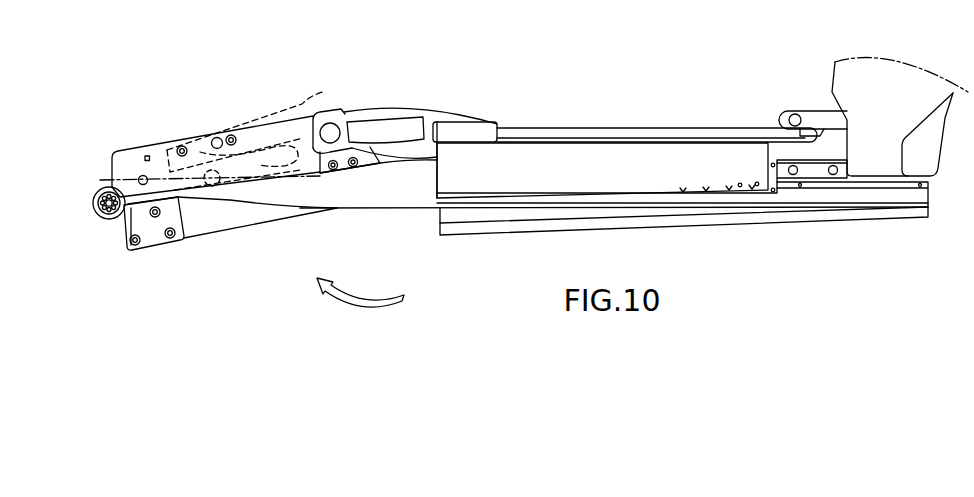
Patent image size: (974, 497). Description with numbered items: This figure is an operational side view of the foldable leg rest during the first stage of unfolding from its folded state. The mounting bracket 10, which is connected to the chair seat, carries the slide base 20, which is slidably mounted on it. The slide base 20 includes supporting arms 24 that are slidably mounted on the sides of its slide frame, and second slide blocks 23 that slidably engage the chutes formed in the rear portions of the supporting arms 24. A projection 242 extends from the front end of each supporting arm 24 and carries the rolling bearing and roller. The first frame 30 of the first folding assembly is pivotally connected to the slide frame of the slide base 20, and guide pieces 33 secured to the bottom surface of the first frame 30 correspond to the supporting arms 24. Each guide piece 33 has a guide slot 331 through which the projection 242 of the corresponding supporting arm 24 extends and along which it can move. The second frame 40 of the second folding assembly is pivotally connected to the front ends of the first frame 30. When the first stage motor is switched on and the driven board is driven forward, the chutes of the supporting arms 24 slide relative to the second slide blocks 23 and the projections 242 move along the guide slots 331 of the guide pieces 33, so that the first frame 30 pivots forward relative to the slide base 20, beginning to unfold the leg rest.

The mounting bracket 10 is at (830, 236).
The slide base 20 is at (638, 118).
The second slide block 23 is at (750, 184).
The supporting arm 24 is at (401, 206).
The first frame 30 is at (137, 157).
The guide piece 33 is at (222, 128).
The guide slot 331 is at (303, 104).
The second frame 40 is at (220, 220).
The projection 242 is at (100, 180).